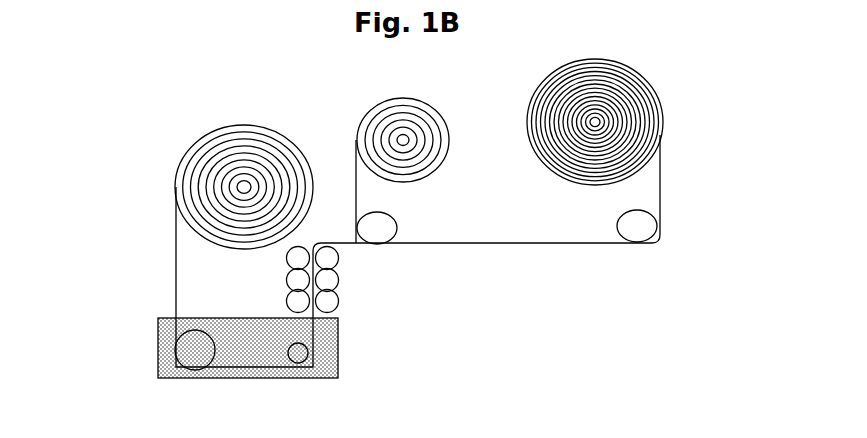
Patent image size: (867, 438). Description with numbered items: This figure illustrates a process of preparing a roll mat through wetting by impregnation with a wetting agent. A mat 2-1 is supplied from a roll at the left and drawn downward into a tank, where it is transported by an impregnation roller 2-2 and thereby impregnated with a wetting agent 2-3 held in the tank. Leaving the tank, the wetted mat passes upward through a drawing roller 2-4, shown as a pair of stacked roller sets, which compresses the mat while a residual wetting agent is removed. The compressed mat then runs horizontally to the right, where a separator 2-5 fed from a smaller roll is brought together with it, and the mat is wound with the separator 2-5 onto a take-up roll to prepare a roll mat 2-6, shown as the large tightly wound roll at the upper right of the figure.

The mat 2-1 is at (194, 173).
The impregnation roller 2-2 is at (178, 365).
The wetting agent 2-3 is at (336, 362).
The drawing roller 2-4 is at (338, 283).
The separator 2-5 is at (418, 113).
The roll mat 2-6 is at (650, 120).